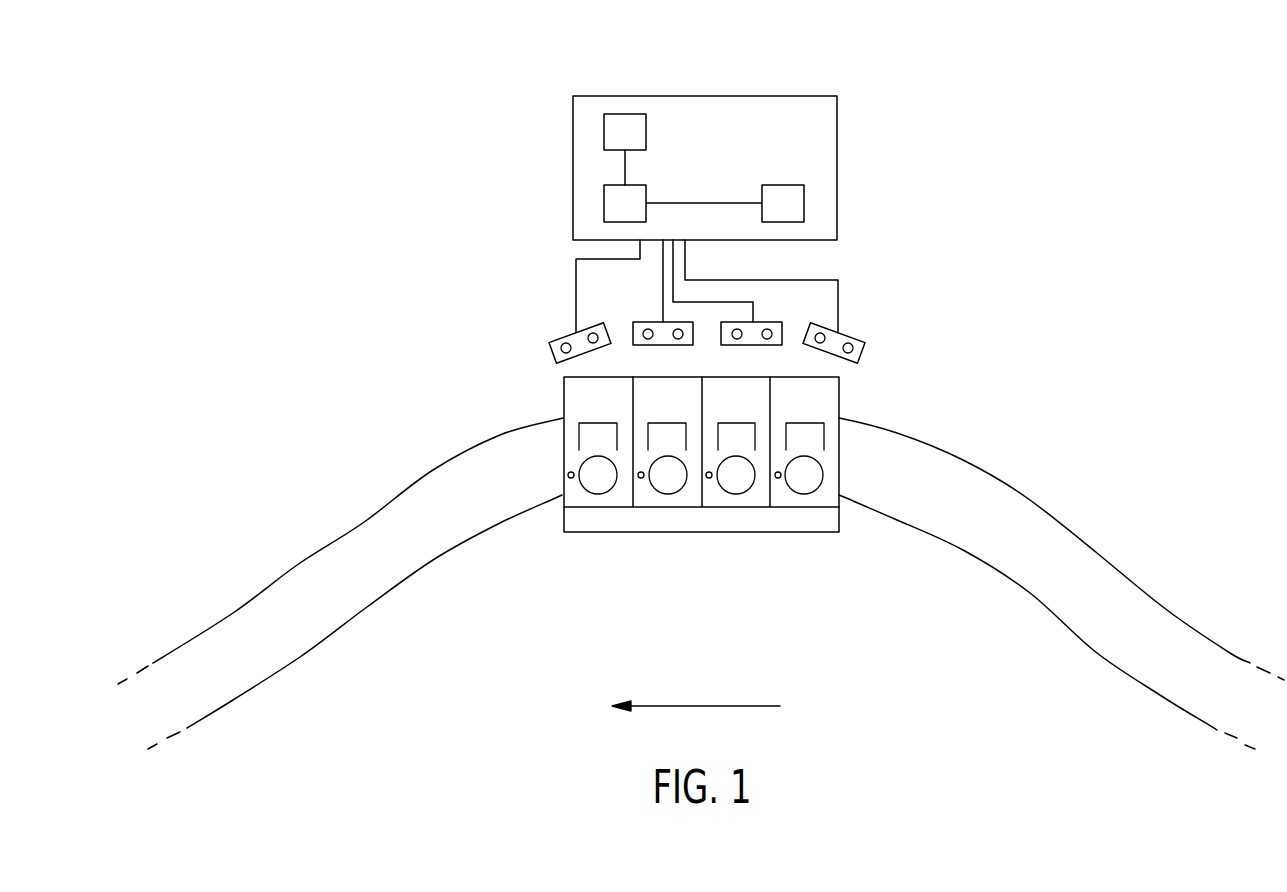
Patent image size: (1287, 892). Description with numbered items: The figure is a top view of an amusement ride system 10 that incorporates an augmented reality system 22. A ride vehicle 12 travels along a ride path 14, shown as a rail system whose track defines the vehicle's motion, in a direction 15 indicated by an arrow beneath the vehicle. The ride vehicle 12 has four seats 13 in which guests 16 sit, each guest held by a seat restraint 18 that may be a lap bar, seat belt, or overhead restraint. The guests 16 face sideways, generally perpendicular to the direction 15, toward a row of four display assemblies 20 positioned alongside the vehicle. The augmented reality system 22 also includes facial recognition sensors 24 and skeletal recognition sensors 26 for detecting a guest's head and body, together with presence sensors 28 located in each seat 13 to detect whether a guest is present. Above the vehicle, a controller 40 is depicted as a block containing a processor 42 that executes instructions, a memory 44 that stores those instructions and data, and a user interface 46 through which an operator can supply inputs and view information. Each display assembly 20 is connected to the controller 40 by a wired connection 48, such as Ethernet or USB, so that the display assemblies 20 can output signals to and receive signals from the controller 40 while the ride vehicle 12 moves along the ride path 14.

The amusement ride system 10 is at (1113, 201).
The ride vehicle 12 is at (702, 533).
The seats 13 is at (668, 494).
The ride path 14 is at (948, 542).
The direction 15 is at (704, 706).
The guests 16 is at (802, 494).
The seat restraints 18 is at (800, 423).
The display assemblies 20 is at (553, 355).
The augmented reality system 22 is at (908, 318).
The facial recognition sensors 24 is at (562, 338).
The skeletal recognition sensors 26 is at (594, 337).
The presence sensors 28 is at (566, 475).
The controller 40 is at (704, 96).
The processor 42 is at (604, 203).
The memory 44 is at (604, 132).
The user interface 46 is at (804, 203).
The wired connection 48 is at (576, 275).